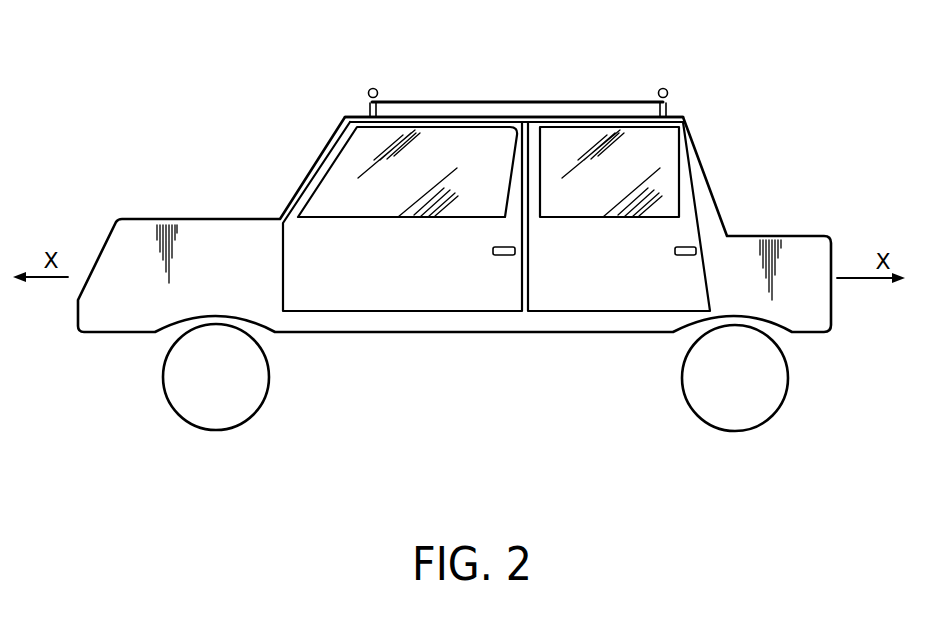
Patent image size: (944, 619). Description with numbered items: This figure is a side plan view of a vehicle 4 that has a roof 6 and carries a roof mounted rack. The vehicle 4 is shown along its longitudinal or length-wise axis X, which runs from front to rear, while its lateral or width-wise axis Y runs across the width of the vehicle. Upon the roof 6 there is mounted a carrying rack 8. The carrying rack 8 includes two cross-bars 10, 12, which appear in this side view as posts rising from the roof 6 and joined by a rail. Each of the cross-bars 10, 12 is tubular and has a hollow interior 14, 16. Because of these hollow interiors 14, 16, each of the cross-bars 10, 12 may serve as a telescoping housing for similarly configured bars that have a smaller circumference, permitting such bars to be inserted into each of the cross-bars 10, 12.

The vehicle 4 is at (734, 175).
The roof 6 is at (344, 104).
The carrying rack 8 is at (680, 107).
The cross-bar 10 is at (368, 77).
The cross-bar 12 is at (658, 77).
The hollow interior 14 is at (377, 89).
The hollow interior 16 is at (667, 89).